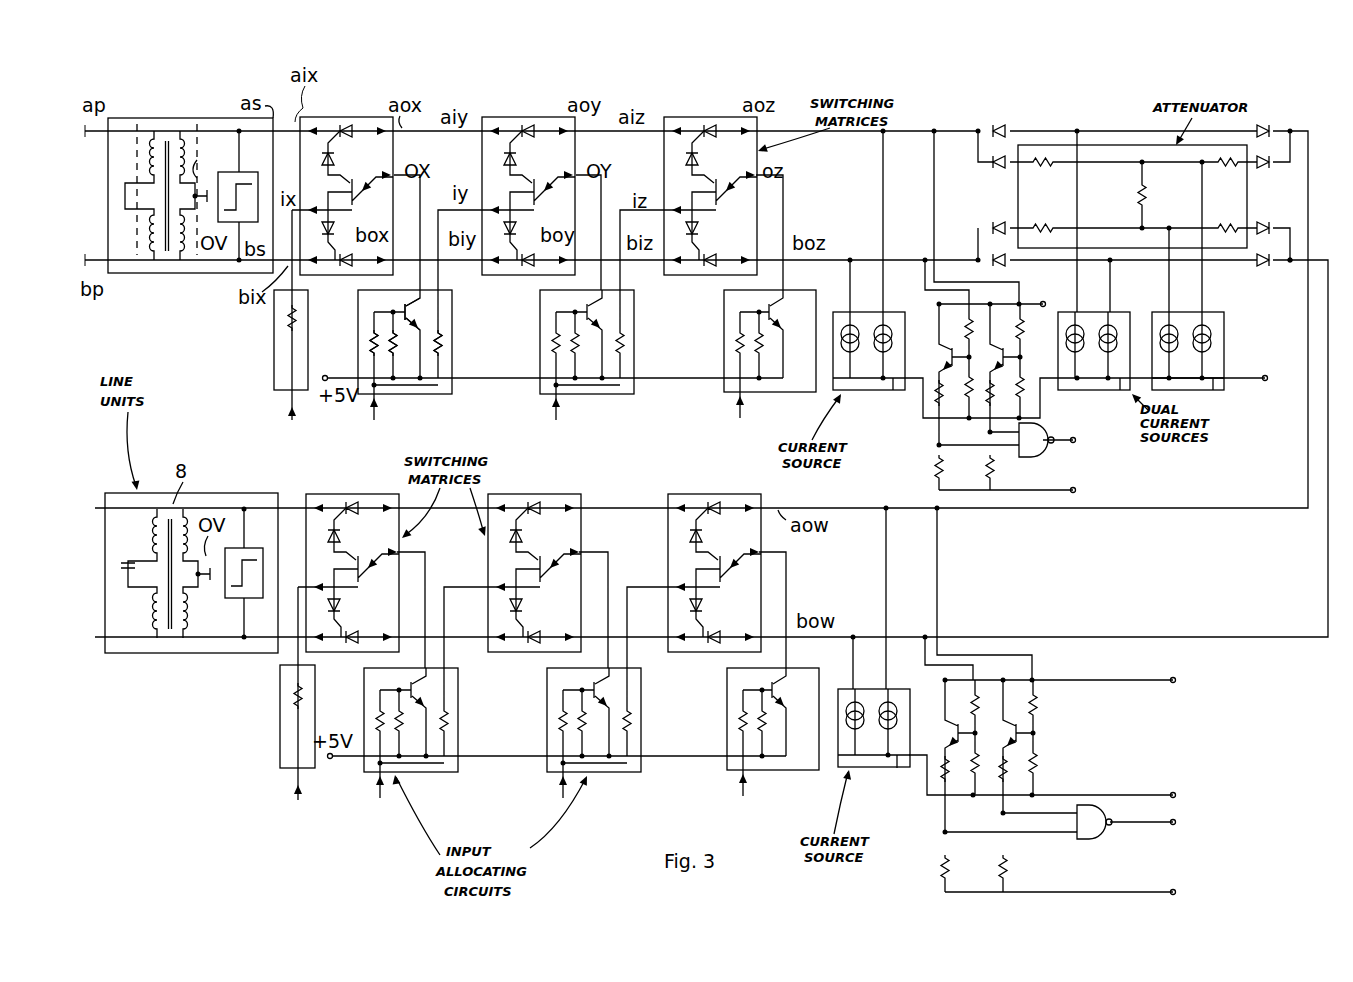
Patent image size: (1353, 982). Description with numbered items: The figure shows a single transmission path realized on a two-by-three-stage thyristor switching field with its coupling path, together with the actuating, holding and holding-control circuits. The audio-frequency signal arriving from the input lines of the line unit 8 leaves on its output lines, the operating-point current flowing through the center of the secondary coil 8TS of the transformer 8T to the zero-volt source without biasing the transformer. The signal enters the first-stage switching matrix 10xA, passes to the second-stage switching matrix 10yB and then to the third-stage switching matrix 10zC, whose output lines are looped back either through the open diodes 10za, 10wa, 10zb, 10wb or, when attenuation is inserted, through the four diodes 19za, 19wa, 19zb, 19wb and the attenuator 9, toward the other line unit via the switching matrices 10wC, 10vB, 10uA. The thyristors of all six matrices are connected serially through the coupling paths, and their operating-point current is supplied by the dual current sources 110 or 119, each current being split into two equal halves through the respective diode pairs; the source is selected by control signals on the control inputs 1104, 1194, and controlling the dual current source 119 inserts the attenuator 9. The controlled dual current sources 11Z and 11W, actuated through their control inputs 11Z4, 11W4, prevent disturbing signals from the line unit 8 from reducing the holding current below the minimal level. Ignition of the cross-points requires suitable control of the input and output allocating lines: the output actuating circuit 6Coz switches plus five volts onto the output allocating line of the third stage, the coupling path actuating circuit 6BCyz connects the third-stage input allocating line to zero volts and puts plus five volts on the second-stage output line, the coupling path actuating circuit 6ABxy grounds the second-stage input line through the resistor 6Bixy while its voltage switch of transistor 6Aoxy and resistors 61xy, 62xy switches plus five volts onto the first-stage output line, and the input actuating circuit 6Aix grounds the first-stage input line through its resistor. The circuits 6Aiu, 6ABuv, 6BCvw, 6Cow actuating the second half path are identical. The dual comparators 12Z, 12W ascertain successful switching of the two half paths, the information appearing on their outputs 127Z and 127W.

The line unit 8 is at (178, 118).
The transformer 8T is at (156, 270).
The secondary coil 8TS is at (196, 292).
The attenuator 9 is at (1126, 150).
The switching matrix 10xA is at (338, 116).
The switching matrix 10yB is at (518, 116).
The switching matrix 10zC is at (700, 116).
The switching matrix 10uA is at (344, 496).
The switching matrix 10vB is at (525, 496).
The switching matrix 10wC is at (704, 496).
The diode 10za is at (1002, 124).
The diode 10zb is at (1006, 260).
The diode 10wa is at (1264, 124).
The diode 10wb is at (1266, 268).
The diode 19za is at (998, 168).
The diode 19zb is at (994, 228).
The diode 19wa is at (1268, 168).
The diode 19wb is at (1256, 224).
The input actuating circuit 6Aix is at (278, 394).
The input actuating circuit 6Aiu is at (274, 764).
The coupling path actuating circuit 6ABxy is at (410, 358).
The coupling path actuating circuit 6BCyz is at (593, 357).
The output actuating circuit 6Coz is at (816, 392).
The coupling path actuating circuit 6ABuv is at (418, 738).
The coupling path actuating circuit 6BCvw is at (604, 738).
The output actuating circuit 6Cow is at (814, 774).
The resistor 61xy is at (382, 326).
The resistor 62xy is at (372, 338).
The transistor 6Aoxy is at (430, 308).
The resistor 6Bixy is at (441, 340).
The controlled dual current source 11Z is at (868, 390).
The control input 11Z4 is at (893, 406).
The dual comparator 12Z is at (930, 478).
The output 127Z is at (1054, 448).
The dual current source 110 is at (1086, 390).
The control input 1104 is at (1120, 412).
The dual current source 119 is at (1224, 348).
The control input 1194 is at (1213, 412).
The controlled dual current source 11W is at (872, 768).
The control input 11W4 is at (903, 772).
The dual comparator 12W is at (930, 884).
The output 127W is at (1157, 822).